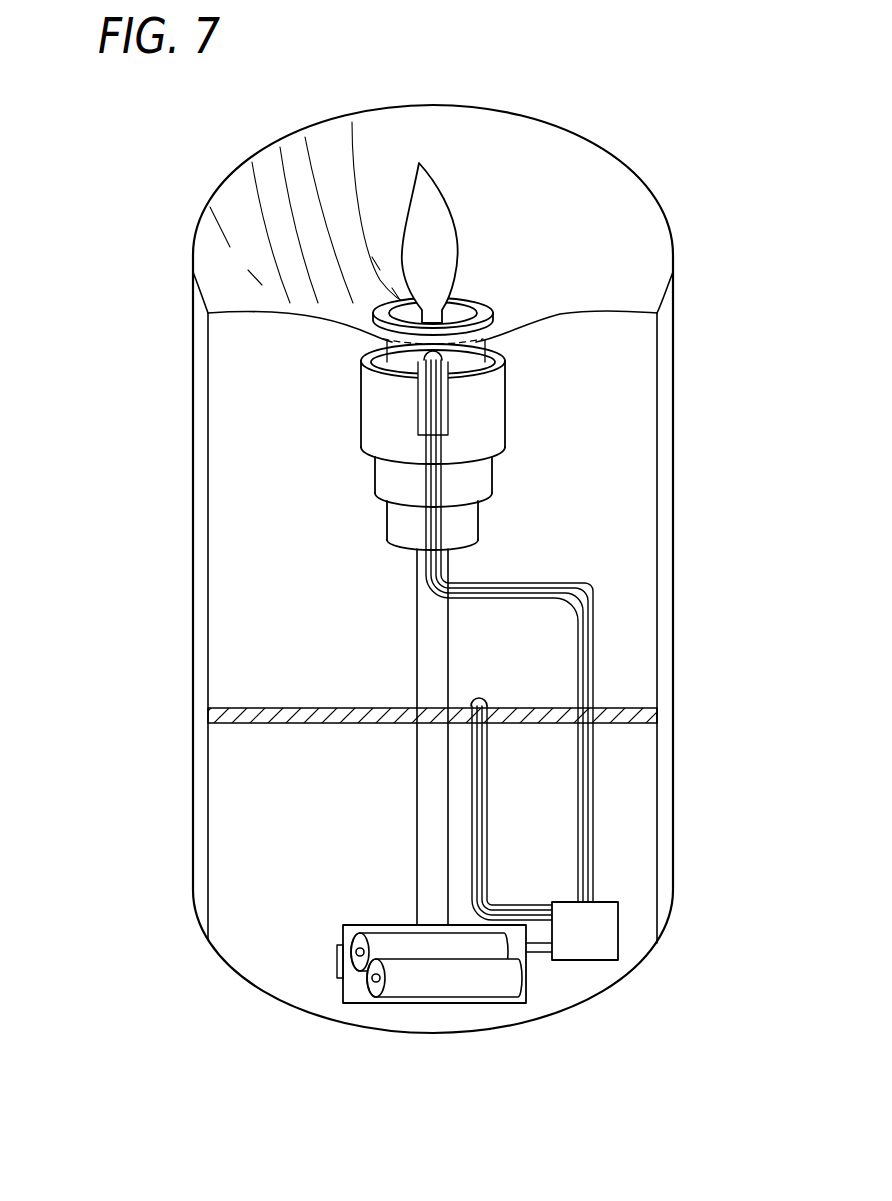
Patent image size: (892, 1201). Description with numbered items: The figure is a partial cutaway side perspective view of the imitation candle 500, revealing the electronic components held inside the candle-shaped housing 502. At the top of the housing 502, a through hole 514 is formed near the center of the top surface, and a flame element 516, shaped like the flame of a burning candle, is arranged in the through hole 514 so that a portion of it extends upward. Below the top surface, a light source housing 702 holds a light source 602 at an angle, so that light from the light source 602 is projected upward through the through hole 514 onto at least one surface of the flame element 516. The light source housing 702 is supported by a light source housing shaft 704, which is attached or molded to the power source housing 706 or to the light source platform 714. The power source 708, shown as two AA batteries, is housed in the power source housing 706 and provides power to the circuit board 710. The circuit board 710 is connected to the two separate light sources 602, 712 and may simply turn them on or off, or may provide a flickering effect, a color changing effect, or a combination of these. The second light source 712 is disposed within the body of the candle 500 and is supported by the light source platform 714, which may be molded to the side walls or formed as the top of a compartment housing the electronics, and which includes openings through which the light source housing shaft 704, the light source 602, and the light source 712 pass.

The imitation candle 500 is at (135, 148).
The housing 502 is at (193, 433).
The through hole 514 is at (457, 313).
The flame element 516 is at (435, 227).
The light source 602 is at (437, 351).
The light source housing 702 is at (487, 425).
The light source housing shaft 704 is at (418, 628).
The power source housing 706 is at (353, 988).
The power source 708 is at (447, 980).
The circuit board 710 is at (617, 930).
The light source 712 is at (478, 700).
The light source platform 714 is at (627, 723).